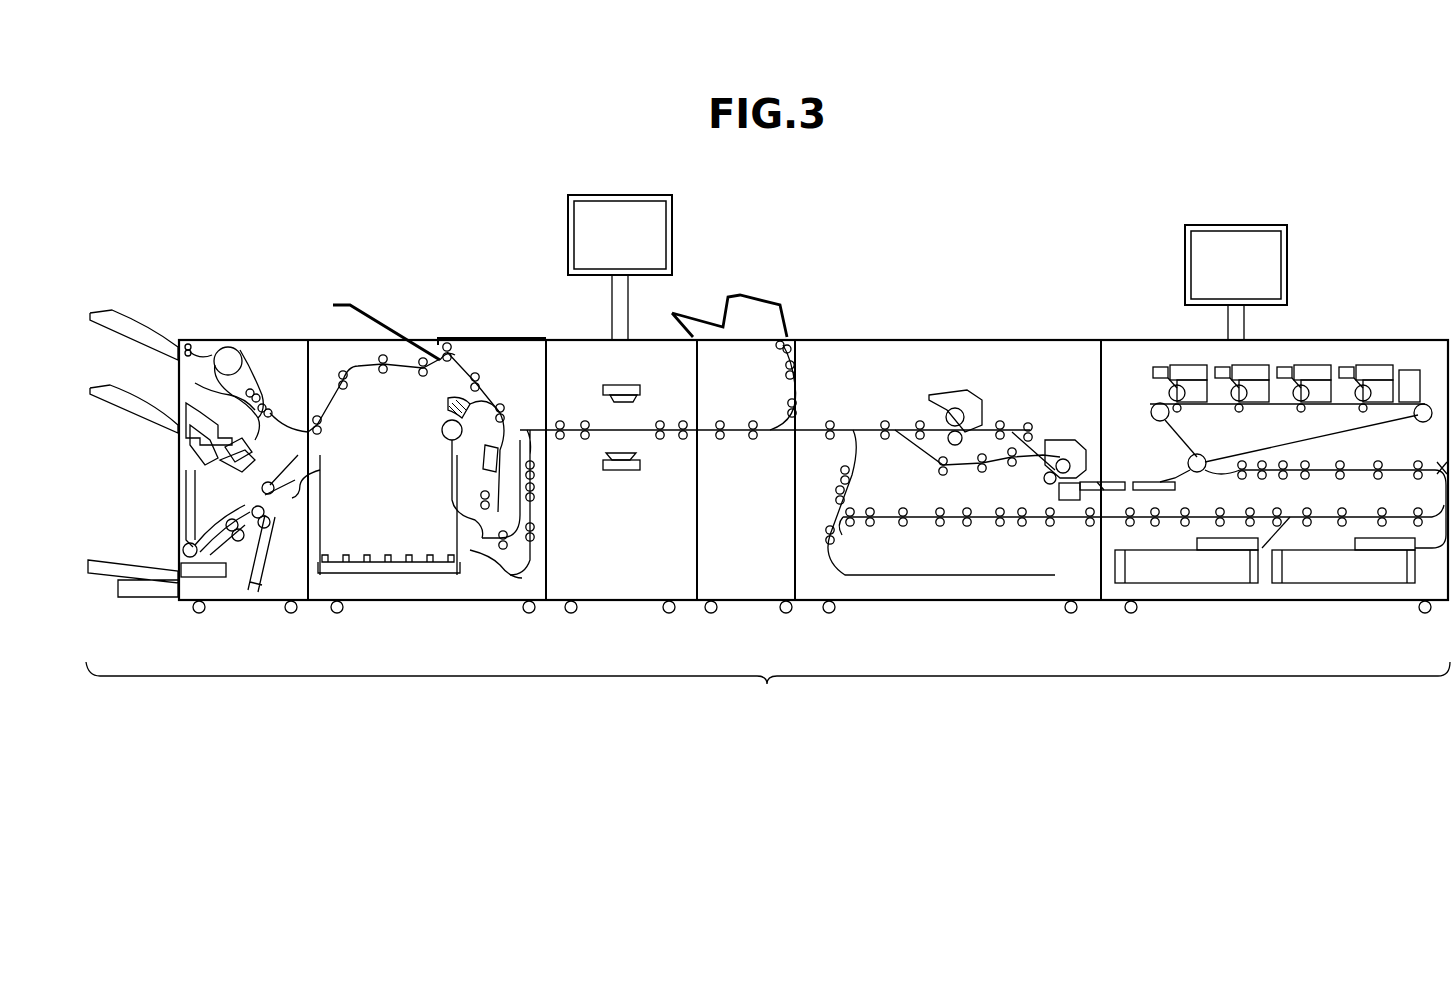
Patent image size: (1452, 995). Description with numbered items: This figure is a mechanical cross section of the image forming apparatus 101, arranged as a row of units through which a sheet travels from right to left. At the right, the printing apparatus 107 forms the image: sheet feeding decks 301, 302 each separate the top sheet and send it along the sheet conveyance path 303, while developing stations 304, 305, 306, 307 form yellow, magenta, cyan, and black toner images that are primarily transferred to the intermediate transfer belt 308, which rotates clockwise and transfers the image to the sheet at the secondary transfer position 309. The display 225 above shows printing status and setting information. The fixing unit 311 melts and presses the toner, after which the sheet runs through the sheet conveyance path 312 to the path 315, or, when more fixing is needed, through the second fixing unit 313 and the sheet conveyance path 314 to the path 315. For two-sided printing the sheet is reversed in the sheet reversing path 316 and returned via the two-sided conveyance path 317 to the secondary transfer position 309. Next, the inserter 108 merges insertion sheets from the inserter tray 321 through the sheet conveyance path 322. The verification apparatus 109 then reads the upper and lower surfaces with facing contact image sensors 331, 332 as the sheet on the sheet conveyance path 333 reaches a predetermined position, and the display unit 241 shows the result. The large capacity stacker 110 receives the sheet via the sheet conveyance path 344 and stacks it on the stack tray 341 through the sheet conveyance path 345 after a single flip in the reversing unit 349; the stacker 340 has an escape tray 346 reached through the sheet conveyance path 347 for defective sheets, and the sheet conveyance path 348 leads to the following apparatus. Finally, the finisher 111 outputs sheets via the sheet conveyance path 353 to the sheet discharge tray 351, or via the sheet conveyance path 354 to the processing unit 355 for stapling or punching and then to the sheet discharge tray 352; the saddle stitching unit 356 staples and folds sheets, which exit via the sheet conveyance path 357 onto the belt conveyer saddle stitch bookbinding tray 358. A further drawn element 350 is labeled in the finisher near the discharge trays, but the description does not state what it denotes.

The image forming apparatus 101 is at (768, 687).
The printing apparatus 107 is at (940, 600).
The inserter 108 is at (748, 600).
The verification apparatus 109 is at (618, 600).
The large capacity stacker 110 is at (433, 600).
The finisher 111 is at (268, 600).
The display 225 is at (1230, 240).
The display unit 241 is at (618, 215).
The sheet feeding deck 301 is at (1195, 583).
The sheet feeding deck 302 is at (1345, 583).
The sheet conveyance path 303 is at (1395, 470).
The developing station 304 is at (1375, 365).
The developing station 305 is at (1318, 365).
The developing station 306 is at (1260, 365).
The developing station 307 is at (1185, 365).
The intermediate transfer belt 308 is at (1280, 462).
The secondary transfer position 309 is at (1160, 430).
The fixing unit 311 is at (1060, 437).
The sheet conveyance path 312 is at (905, 447).
The second fixing unit 313 is at (947, 392).
The sheet conveyance path 314 is at (893, 428).
The path 315 is at (830, 428).
The sheet reversing path 316 is at (918, 575).
The two-sided conveyance path 317 is at (1065, 520).
The inserter tray 321 is at (700, 320).
The sheet conveyance path 322 is at (790, 388).
The contact image sensor 331 is at (618, 383).
The contact image sensor 332 is at (620, 470).
The sheet conveyance path 333 is at (600, 428).
The stacker 340 is at (497, 338).
The stack tray 341 is at (389, 548).
The sheet conveyance path 344 is at (458, 510).
The sheet conveyance path 345 is at (448, 400).
The escape tray 346 is at (378, 335).
The sheet conveyance path 347 is at (468, 364).
The sheet conveyance path 348 is at (352, 366).
The reversing unit 349 is at (470, 550).
The folding roller 350 is at (258, 342).
The sheet discharge tray 351 is at (122, 318).
The sheet discharge tray 352 is at (112, 385).
The sheet conveyance path 353 is at (204, 342).
The sheet conveyance path 354 is at (195, 383).
The processing unit 355 is at (178, 453).
The saddle stitching unit 356 is at (292, 498).
The sheet conveyance path 357 is at (212, 580).
The saddle stitch bookbinding tray 358 is at (122, 560).